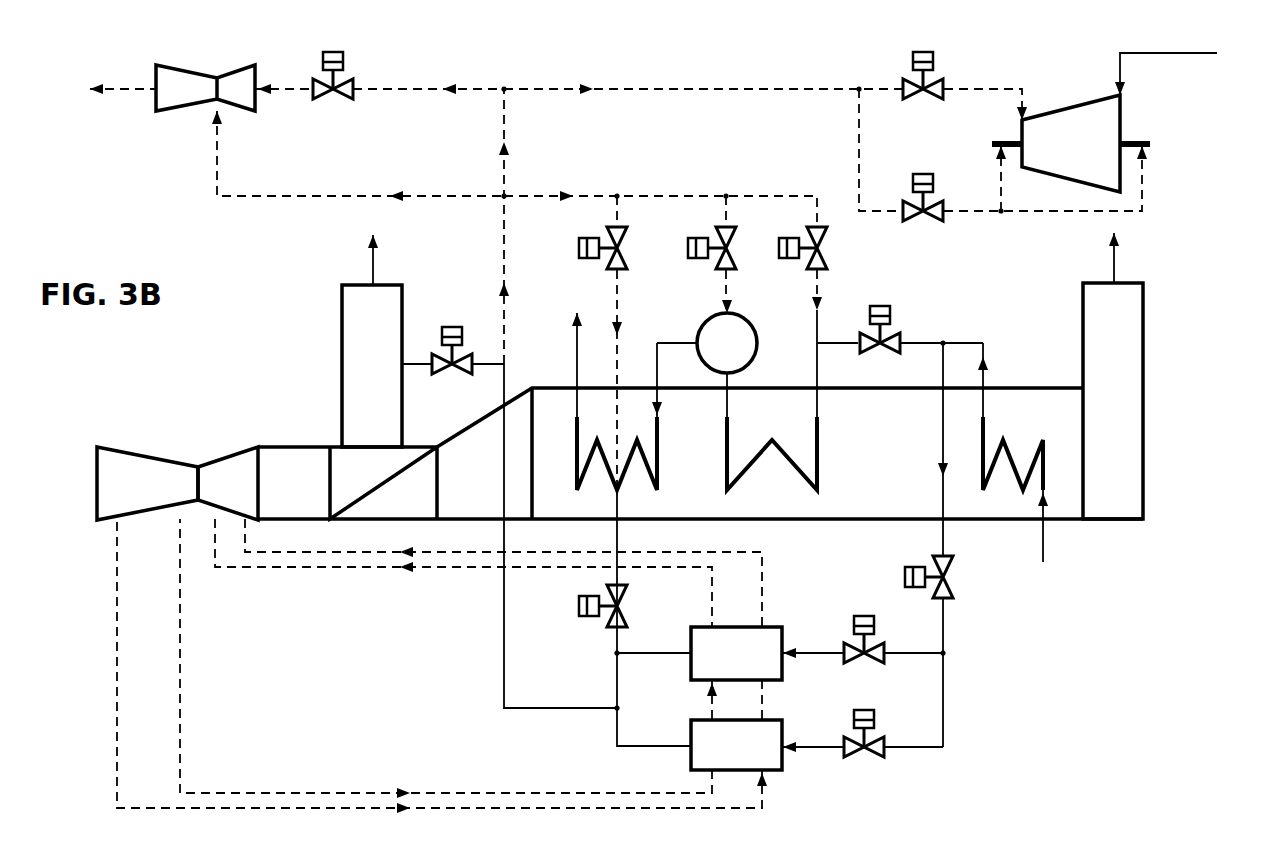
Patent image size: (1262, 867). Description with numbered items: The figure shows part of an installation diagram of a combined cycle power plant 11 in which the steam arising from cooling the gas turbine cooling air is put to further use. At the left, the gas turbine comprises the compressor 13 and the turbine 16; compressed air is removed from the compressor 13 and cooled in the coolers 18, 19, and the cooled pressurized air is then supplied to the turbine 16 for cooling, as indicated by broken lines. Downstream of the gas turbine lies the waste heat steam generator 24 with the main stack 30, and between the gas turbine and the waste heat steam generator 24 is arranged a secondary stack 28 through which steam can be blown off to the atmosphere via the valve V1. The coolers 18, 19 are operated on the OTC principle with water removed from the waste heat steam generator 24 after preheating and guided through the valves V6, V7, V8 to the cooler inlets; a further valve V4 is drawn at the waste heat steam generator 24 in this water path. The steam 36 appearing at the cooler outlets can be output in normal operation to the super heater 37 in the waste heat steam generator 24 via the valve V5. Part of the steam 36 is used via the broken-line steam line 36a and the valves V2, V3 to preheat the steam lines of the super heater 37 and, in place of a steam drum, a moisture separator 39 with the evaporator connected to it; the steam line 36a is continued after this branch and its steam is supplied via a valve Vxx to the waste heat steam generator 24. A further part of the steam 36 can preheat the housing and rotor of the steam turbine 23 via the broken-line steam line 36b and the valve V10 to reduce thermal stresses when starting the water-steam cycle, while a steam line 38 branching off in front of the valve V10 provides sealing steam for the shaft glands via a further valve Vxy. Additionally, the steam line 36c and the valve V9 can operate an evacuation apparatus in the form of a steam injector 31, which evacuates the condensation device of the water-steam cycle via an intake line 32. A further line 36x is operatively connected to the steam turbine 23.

The gas turbine engine 11 is at (191, 422).
The compressor 13 is at (129, 497).
The turbine 16 is at (214, 497).
The cooler 18 is at (721, 761).
The cooler 19 is at (721, 668).
The steam turbine 23 is at (1057, 157).
The waste heat steam generator 24 is at (864, 464).
The secondary stack 28 is at (357, 373).
The main stack 30 is at (1097, 387).
The steam injector 31 is at (187, 93).
The intake line 32 is at (255, 196).
The steam 36 is at (504, 665).
The steam line 36a is at (543, 196).
The steam line 36b is at (704, 89).
The steam line 36c is at (403, 89).
The line 36x is at (1178, 53).
The super heater 37 is at (605, 470).
The steam line 38 is at (859, 172).
The moisture separator 39 is at (712, 356).
The valve V1 is at (452, 322).
The valve V2 is at (603, 263).
The valve V3 is at (712, 263).
The valve V4 is at (880, 302).
The valve V5 is at (616, 619).
The valve V6 is at (945, 591).
The valve V7 is at (878, 655).
The valve V8 is at (878, 748).
The valve V9 is at (333, 104).
The valve V10 is at (923, 93).
The valve Vxx is at (803, 263).
The valve Vxy is at (935, 212).